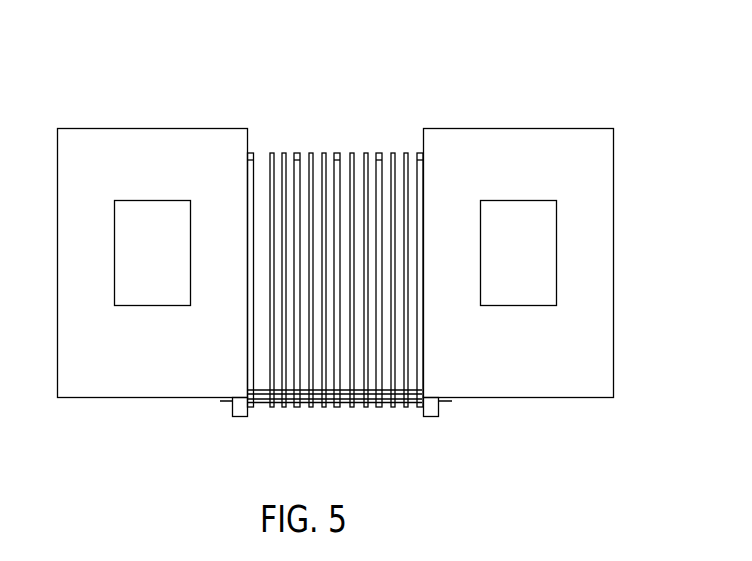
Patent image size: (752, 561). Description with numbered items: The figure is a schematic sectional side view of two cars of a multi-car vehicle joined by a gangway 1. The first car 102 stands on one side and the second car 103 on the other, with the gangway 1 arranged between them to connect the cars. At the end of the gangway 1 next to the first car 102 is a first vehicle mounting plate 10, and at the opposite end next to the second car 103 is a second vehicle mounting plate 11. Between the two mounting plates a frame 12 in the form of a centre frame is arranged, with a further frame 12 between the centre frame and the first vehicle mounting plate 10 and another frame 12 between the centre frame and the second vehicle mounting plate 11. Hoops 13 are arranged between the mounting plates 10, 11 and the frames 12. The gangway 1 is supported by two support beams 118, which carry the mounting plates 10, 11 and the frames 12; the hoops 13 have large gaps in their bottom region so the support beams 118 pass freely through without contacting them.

The gangway 1 is at (468, 57).
The first vehicle mounting plate 10 is at (250, 152).
The second vehicle mounting plate 11 is at (420, 152).
The frame 12 is at (297, 152).
The hoop 13 is at (271, 152).
The first car 102 is at (563, 140).
The second car 103 is at (117, 148).
The support beam 118 is at (410, 402).